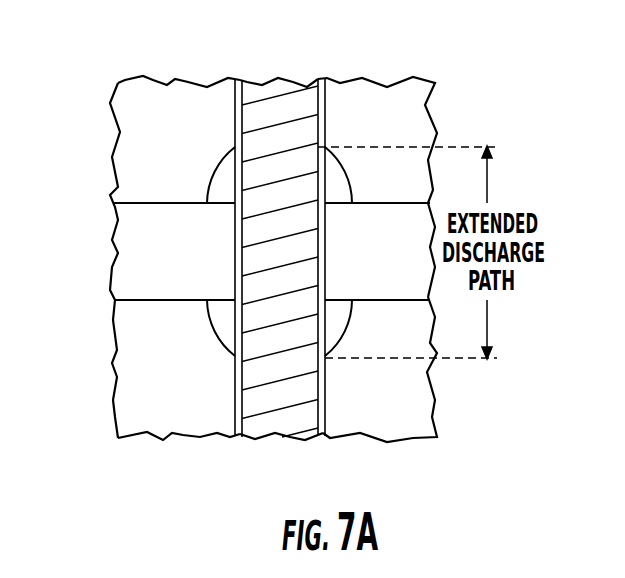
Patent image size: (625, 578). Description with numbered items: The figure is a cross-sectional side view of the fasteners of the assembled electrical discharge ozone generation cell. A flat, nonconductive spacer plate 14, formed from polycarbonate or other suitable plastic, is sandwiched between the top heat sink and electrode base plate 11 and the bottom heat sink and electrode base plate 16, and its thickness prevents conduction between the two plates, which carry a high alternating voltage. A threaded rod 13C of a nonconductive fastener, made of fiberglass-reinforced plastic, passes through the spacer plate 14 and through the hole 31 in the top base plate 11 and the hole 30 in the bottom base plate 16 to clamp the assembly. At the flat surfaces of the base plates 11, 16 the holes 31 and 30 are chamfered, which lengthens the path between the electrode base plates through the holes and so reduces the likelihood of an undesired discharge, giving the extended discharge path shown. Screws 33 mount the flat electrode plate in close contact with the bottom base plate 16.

The top heat sink and electrode base plate 11 is at (400, 100).
The spacer plate 14 is at (157, 260).
The bottom heat sink and electrode base plate 16 is at (410, 392).
The threaded rod 13C is at (278, 104).
The hole 30 is at (237, 408).
The hole 31 is at (318, 108).
The screw 33 is at (325, 258).